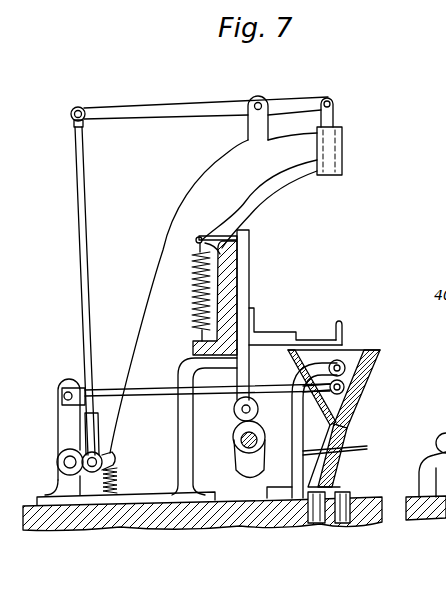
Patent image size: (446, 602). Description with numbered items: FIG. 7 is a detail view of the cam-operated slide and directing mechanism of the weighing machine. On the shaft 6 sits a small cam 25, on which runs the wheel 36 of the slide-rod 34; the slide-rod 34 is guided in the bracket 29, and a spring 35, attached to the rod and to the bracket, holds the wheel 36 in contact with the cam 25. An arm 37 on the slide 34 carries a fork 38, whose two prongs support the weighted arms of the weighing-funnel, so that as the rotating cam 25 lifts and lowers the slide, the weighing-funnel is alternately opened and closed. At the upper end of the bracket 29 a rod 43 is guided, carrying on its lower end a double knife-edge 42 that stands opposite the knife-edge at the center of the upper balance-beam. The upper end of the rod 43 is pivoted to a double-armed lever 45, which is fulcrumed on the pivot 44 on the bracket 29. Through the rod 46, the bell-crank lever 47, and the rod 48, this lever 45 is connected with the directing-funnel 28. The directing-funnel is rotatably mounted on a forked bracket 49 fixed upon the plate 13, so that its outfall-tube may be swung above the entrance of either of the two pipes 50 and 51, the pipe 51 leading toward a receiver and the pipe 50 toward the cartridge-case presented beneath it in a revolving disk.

The shaft 6 is at (241, 440).
The plate 13 is at (226, 524).
The cam 25 is at (238, 468).
The directing-funnel 28 is at (366, 392).
The bracket 29 is at (163, 251).
The slide-rod 34 is at (250, 258).
The spring 35 is at (191, 291).
The wheel 36 is at (234, 409).
The arm 37 is at (278, 334).
The fork 38 is at (317, 340).
The double knife-edge 42 is at (342, 170).
The rod 43 is at (333, 112).
The pivot 44 is at (258, 100).
The double-armed lever 45 is at (163, 111).
The rod 46 is at (93, 293).
The bell-crank lever 47 is at (58, 430).
The rod 48 is at (146, 397).
The forked bracket 49 is at (298, 436).
The pipe 50 is at (337, 526).
The pipe 51 is at (309, 526).